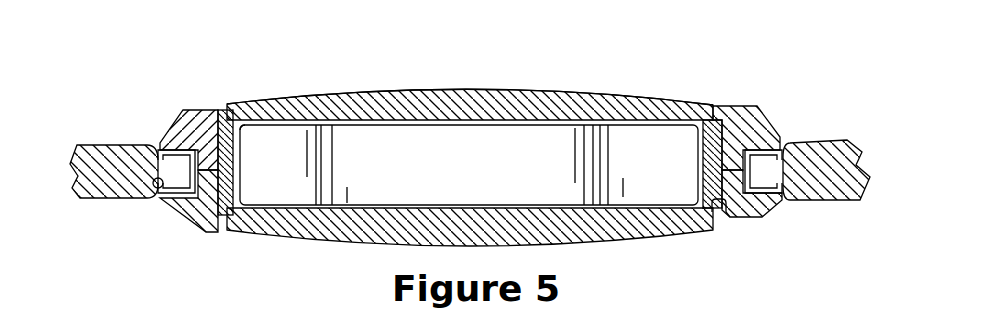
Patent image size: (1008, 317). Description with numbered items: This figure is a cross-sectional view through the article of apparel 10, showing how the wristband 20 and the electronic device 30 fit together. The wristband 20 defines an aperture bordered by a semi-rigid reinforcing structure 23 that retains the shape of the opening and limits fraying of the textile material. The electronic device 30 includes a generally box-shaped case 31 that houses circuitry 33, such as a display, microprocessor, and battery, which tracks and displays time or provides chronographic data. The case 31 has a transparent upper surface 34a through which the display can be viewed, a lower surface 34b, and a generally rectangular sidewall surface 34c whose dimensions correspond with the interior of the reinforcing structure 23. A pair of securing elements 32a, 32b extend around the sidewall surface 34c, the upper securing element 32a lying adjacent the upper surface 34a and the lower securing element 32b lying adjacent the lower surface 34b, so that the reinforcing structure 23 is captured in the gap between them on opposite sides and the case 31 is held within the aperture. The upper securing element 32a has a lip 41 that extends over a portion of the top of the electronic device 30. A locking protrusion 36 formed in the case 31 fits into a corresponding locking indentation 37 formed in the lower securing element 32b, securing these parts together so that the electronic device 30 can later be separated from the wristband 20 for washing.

The article of apparel 10 is at (150, 77).
The wristband 20 is at (107, 140).
The reinforcing structure 23 is at (152, 187).
The electronic device 30 is at (458, 158).
The case 31 is at (402, 92).
The securing element 32a is at (198, 110).
The securing element 32b is at (165, 210).
The circuitry 33 is at (478, 176).
The upper surface 34a is at (470, 80).
The lower surface 34b is at (347, 244).
The sidewall surface 34c is at (204, 214).
The locking protrusion 36 is at (720, 213).
The locking indentation 37 is at (730, 212).
The lip 41 is at (226, 125).